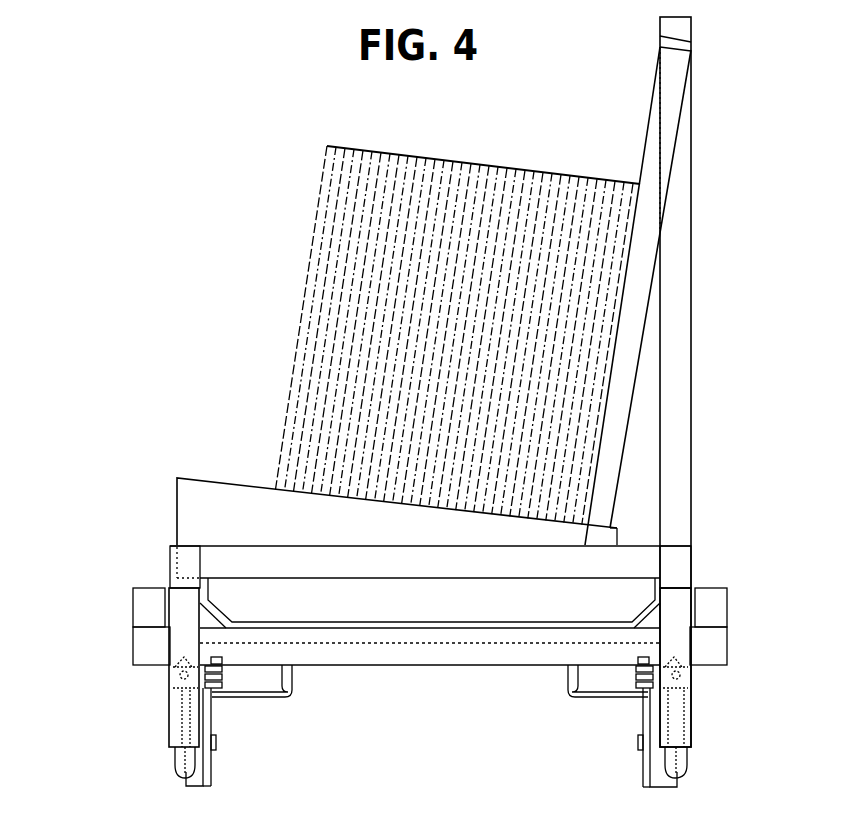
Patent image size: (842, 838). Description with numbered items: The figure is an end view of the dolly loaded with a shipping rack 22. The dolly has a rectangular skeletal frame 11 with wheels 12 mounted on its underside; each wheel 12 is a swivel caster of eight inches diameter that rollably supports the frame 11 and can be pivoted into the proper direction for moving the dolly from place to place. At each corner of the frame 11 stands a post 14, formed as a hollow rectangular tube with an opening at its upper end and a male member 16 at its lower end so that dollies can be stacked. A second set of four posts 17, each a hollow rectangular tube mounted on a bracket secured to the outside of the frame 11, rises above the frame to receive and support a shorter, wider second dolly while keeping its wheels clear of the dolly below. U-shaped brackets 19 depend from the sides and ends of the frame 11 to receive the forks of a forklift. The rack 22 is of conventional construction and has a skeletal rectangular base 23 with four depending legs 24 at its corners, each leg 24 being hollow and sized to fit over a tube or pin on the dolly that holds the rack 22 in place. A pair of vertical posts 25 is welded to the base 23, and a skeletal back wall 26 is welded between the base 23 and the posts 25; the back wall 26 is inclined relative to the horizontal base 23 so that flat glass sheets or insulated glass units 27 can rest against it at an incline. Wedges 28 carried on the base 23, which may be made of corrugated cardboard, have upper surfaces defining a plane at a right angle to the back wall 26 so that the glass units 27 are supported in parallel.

The frame 11 is at (377, 653).
The wheel 12 is at (203, 770).
The post 14 is at (173, 707).
The male member 16 is at (177, 758).
The second post 17 is at (145, 607).
The U-shaped bracket 19 is at (272, 690).
The rack 22 is at (712, 388).
The base 23 is at (433, 565).
The leg 24 is at (182, 557).
The vertical post 25 is at (672, 265).
The back wall 26 is at (650, 163).
The flat glass sheet or insulated glass unit 27 is at (460, 170).
The wedge 28 is at (220, 497).